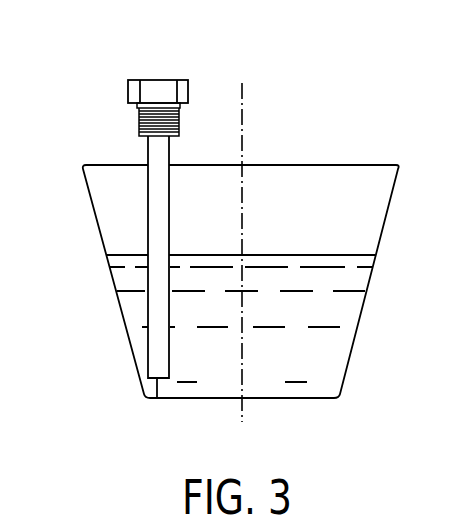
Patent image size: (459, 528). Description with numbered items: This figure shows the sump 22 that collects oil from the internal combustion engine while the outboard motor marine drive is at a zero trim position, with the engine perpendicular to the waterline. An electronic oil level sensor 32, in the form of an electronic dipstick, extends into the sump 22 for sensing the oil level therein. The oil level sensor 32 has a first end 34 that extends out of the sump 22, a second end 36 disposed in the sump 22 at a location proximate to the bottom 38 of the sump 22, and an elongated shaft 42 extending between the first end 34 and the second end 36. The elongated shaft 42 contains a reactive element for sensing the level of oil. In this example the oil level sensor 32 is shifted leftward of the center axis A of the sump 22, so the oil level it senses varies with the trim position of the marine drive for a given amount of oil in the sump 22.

The sump 22 is at (390, 198).
The oil level sensor 32 is at (140, 113).
The first end 34 is at (158, 79).
The second end 36 is at (157, 398).
The bottom 38 is at (293, 398).
The elongated shaft 42 is at (158, 203).
The center axis A is at (242, 118).